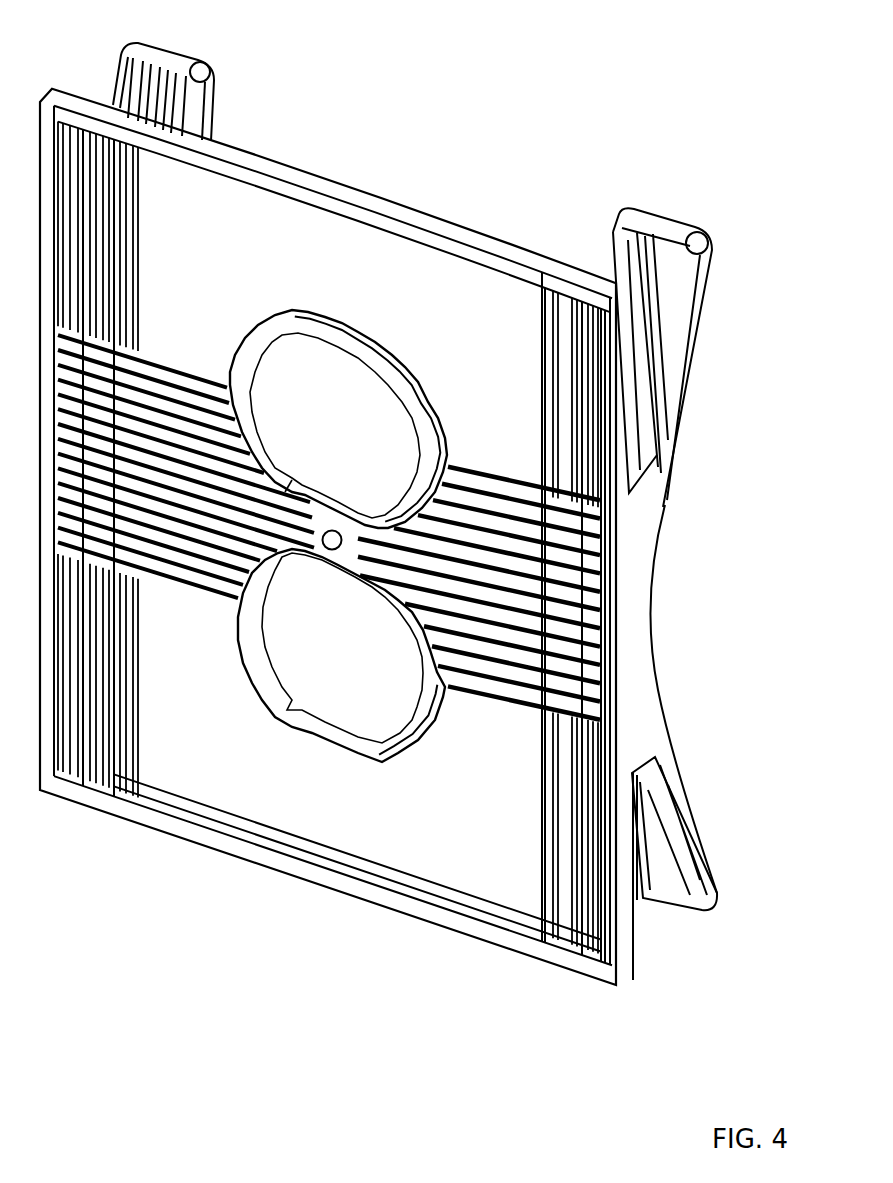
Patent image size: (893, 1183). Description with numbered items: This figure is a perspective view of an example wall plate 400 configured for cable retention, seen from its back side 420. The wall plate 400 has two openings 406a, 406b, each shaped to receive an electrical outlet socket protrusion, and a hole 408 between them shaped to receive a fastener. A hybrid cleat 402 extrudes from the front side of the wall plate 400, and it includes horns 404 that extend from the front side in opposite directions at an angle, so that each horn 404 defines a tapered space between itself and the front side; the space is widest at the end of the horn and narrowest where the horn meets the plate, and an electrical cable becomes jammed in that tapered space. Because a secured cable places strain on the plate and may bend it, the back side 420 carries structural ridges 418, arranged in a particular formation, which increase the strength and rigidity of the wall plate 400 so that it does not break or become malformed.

The wall plate 400 is at (394, 498).
The hybrid cleat 402 is at (683, 643).
The horn 404 is at (166, 31).
The opening 406a is at (321, 400).
The opening 406b is at (314, 673).
The hole 408 is at (332, 562).
The structural ridge 418 is at (538, 803).
The back side 420 is at (461, 316).